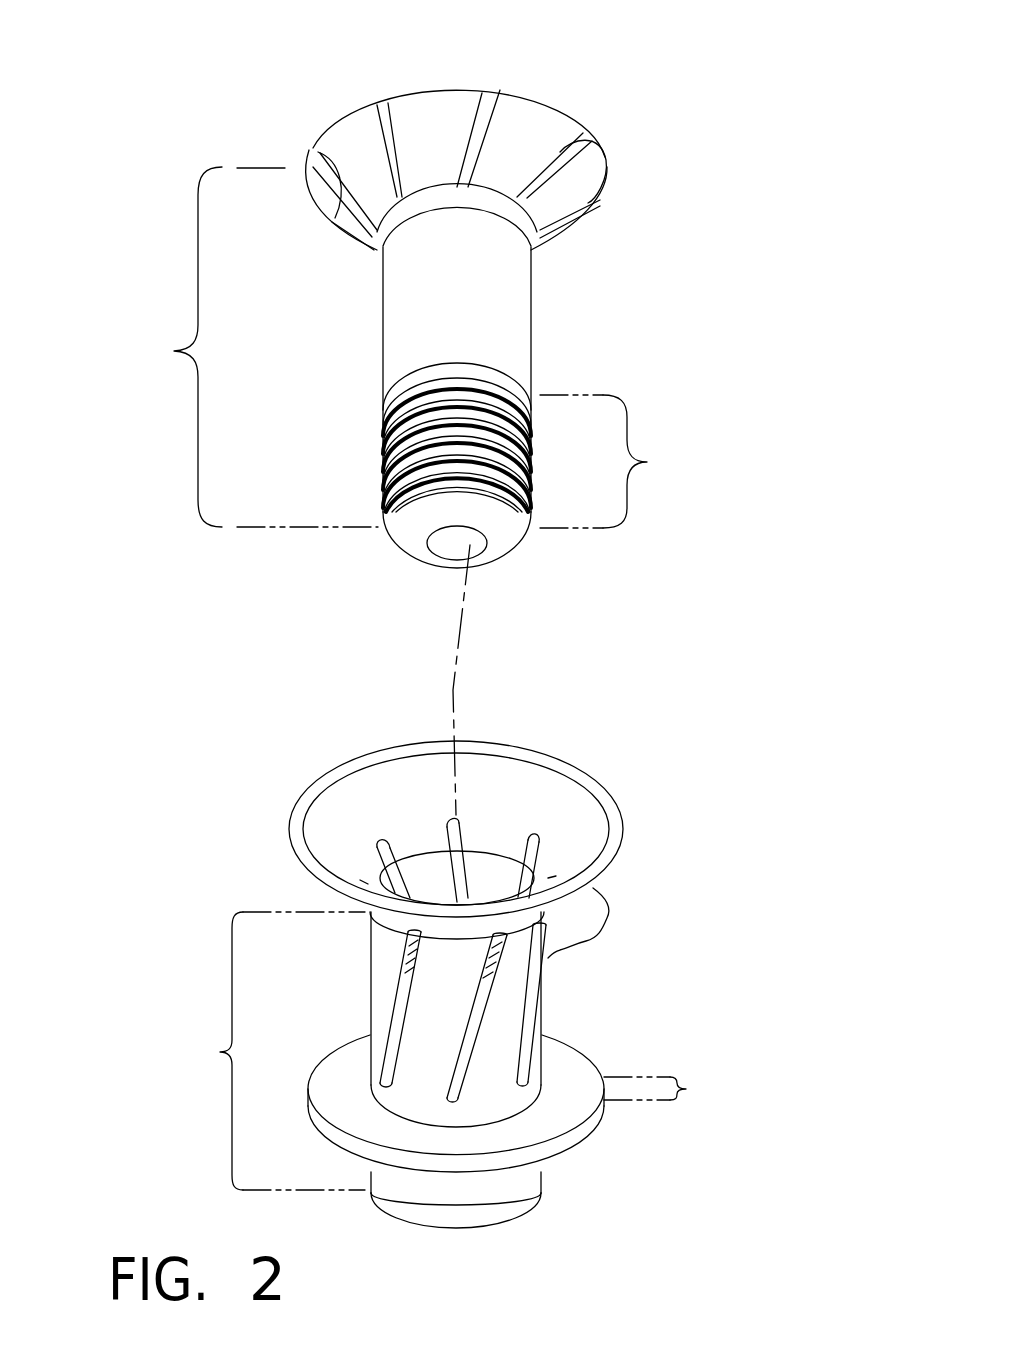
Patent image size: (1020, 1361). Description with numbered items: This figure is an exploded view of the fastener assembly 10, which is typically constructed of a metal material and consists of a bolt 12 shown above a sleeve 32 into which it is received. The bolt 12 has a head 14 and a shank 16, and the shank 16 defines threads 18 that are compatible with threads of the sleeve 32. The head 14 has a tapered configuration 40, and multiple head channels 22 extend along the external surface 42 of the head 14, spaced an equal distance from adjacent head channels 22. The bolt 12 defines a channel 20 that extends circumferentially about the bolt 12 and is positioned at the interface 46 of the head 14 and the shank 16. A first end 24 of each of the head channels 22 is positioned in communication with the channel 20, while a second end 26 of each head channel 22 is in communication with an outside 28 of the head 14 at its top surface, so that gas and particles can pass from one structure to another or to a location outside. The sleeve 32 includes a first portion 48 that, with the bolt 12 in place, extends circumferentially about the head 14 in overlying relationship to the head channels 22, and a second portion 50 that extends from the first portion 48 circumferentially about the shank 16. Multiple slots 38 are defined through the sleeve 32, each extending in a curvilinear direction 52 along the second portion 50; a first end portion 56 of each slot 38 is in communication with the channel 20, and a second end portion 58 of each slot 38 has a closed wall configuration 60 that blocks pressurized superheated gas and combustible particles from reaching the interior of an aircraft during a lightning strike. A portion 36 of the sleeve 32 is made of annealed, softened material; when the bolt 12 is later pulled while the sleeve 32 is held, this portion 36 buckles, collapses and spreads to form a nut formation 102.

The fastener assembly 10 is at (690, 374).
The bolt 12 is at (174, 351).
The head 14 is at (562, 191).
The shank 16 is at (555, 352).
The threads 18 is at (648, 462).
The channel 20 is at (480, 207).
The head channels 22 is at (382, 102).
The first end 24 is at (533, 255).
The second end 26 is at (372, 120).
The outside 28 is at (305, 45).
The sleeve 32 is at (670, 950).
The portion 36 is at (686, 1089).
The slots 38 is at (400, 885).
The tapered configuration 40 is at (437, 170).
The external surface 42 is at (443, 106).
The interface 46 is at (450, 222).
The first portion 48 is at (597, 944).
The second portion 50 is at (220, 1052).
The curvilinear direction 52 is at (453, 963).
The first end portion 56 is at (384, 838).
The second end portion 58 is at (369, 1101).
The closed wall configuration 60 is at (383, 1078).
The nut formation 102 is at (416, 1188).